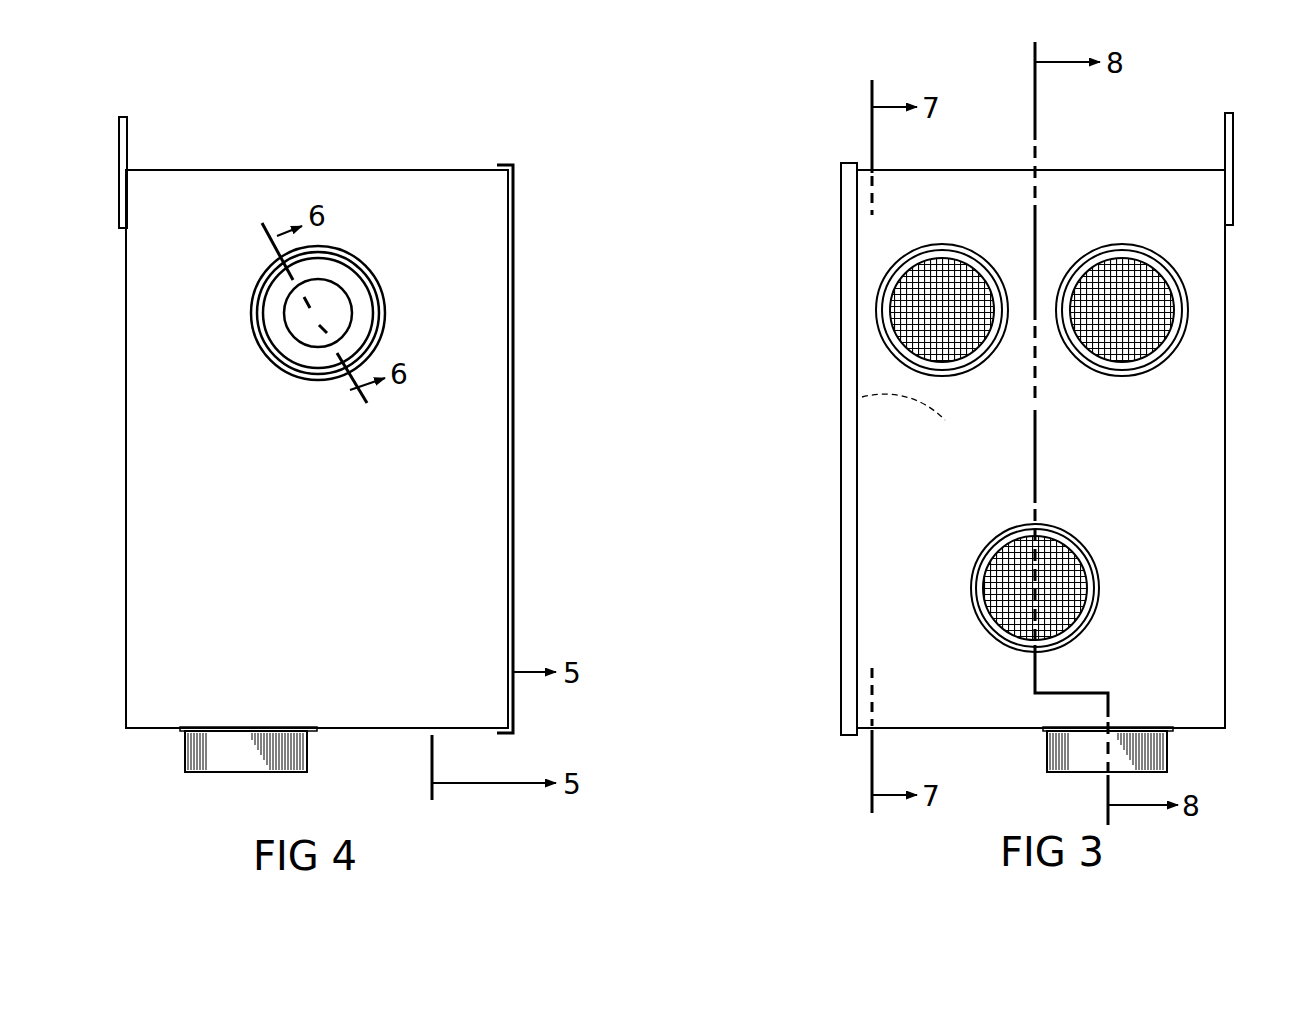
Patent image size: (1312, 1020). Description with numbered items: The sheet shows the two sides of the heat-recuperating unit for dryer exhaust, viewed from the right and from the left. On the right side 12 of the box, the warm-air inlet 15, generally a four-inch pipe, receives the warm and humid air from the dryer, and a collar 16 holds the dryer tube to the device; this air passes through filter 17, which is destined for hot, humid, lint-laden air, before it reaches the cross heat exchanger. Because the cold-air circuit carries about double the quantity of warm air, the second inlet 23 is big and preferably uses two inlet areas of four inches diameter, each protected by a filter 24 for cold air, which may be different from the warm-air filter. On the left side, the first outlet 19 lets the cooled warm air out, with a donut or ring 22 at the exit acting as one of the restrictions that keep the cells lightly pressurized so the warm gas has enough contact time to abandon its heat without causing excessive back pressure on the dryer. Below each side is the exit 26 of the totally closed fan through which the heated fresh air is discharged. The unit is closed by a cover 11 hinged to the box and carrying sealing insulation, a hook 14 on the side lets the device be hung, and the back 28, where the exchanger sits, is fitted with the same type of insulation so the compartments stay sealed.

In FIG. 4, the cover 11 is at (515, 381).
In FIG. 3, the cover 11 is at (847, 252).
In FIG. 3, the right side 12 is at (827, 405).
In FIG. 4, the hook 14 is at (123, 148).
In FIG. 3, the hook 14 is at (1226, 138).
In FIG. 3, the inlet 15 is at (980, 580).
In FIG. 3, the collar 16 is at (972, 600).
In FIG. 3, the filter 17 is at (1030, 593).
In FIG. 4, the first outlet 19 is at (327, 300).
In FIG. 4, the ring 22 is at (358, 307).
In FIG. 3, the second inlet 23 is at (1070, 263).
In FIG. 3, the filter 24 is at (942, 307).
In FIG. 4, the exit 26 is at (185, 750).
In FIG. 3, the exit 26 is at (1167, 757).
In FIG. 4, the back 28 is at (122, 429).
In FIG. 3, the back 28 is at (1228, 411).